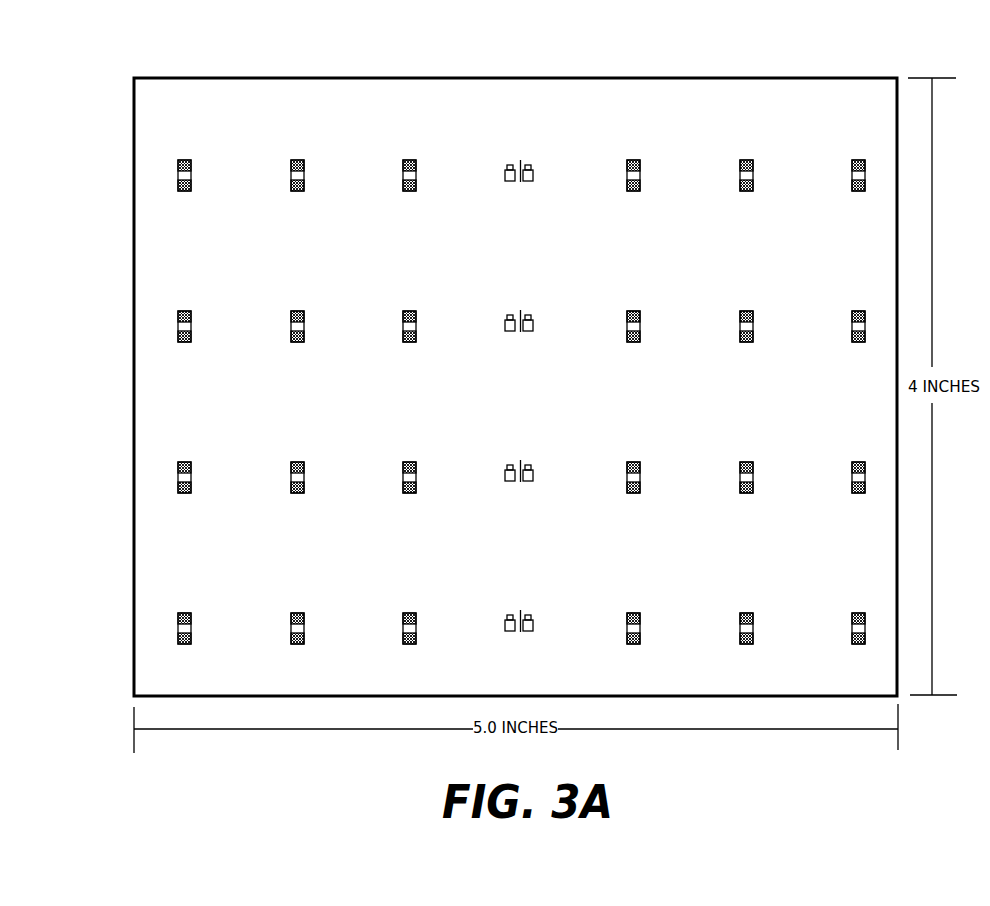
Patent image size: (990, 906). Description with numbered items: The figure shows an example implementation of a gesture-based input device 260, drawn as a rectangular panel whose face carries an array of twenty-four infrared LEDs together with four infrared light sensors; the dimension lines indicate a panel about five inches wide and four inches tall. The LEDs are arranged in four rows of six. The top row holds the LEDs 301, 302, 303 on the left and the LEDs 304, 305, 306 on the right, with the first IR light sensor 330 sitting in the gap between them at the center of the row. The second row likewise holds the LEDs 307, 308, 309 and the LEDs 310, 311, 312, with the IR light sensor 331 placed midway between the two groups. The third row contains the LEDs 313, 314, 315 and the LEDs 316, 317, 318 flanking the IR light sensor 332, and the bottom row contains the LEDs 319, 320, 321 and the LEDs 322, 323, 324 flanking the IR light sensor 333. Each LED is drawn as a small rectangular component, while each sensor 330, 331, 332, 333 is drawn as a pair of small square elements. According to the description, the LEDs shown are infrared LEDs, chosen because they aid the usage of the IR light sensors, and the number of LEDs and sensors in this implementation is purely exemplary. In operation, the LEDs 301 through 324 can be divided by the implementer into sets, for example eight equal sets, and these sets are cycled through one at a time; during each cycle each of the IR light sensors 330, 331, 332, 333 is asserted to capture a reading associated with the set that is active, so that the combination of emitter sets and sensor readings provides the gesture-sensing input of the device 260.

The gesture-based input device 260 is at (247, 77).
The LED 301 is at (185, 158).
The LED 302 is at (298, 158).
The LED 303 is at (410, 158).
The LED 304 is at (634, 158).
The LED 305 is at (747, 158).
The LED 306 is at (859, 158).
The LED 307 is at (182, 344).
The LED 308 is at (295, 344).
The LED 309 is at (407, 344).
The LED 310 is at (631, 344).
The LED 311 is at (744, 344).
The LED 312 is at (856, 344).
The LED 313 is at (185, 460).
The LED 314 is at (298, 460).
The LED 315 is at (410, 460).
The LED 316 is at (634, 460).
The LED 317 is at (747, 460).
The LED 318 is at (859, 460).
The LED 319 is at (182, 646).
The LED 320 is at (295, 646).
The LED 321 is at (407, 646).
The LED 322 is at (631, 646).
The LED 323 is at (744, 646).
The LED 324 is at (856, 646).
The IR light sensor 330 is at (532, 167).
The IR light sensor 331 is at (531, 312).
The IR light sensor 332 is at (531, 463).
The IR light sensor 333 is at (531, 613).